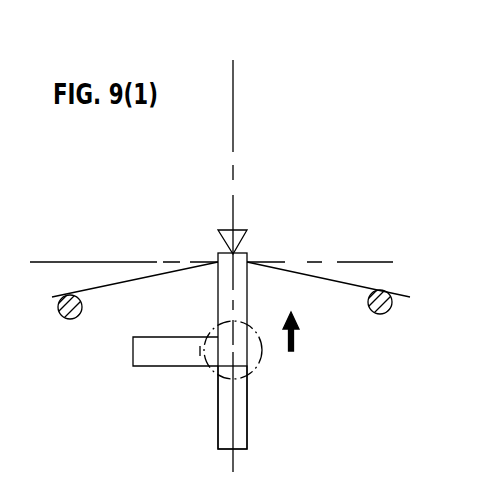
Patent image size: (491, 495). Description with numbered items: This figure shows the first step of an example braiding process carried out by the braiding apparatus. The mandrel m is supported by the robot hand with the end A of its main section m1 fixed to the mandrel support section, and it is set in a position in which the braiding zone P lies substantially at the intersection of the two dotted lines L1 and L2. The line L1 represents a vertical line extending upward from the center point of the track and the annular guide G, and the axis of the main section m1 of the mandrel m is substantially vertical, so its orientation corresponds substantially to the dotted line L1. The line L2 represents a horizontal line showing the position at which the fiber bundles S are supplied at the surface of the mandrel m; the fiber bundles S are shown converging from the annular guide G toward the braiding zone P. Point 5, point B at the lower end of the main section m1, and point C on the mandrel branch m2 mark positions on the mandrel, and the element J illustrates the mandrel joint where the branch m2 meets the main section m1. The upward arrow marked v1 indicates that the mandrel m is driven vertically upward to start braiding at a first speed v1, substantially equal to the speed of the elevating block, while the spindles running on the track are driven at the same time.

The vertical line L1 is at (240, 95).
The horizontal line L2 is at (375, 262).
The connecting point 5 is at (231, 252).
The braiding zone P is at (220, 255).
The mandrel m is at (264, 240).
The main section of the mandrel m1 is at (247, 440).
The mandrel branch m2 is at (148, 370).
The end of the main section A is at (232, 276).
The point B is at (229, 440).
The point C is at (147, 361).
The mandrel joint J is at (258, 372).
The first speed v1 is at (306, 336).
The annular guide G is at (72, 320).
The fiber bundles S is at (52, 299).